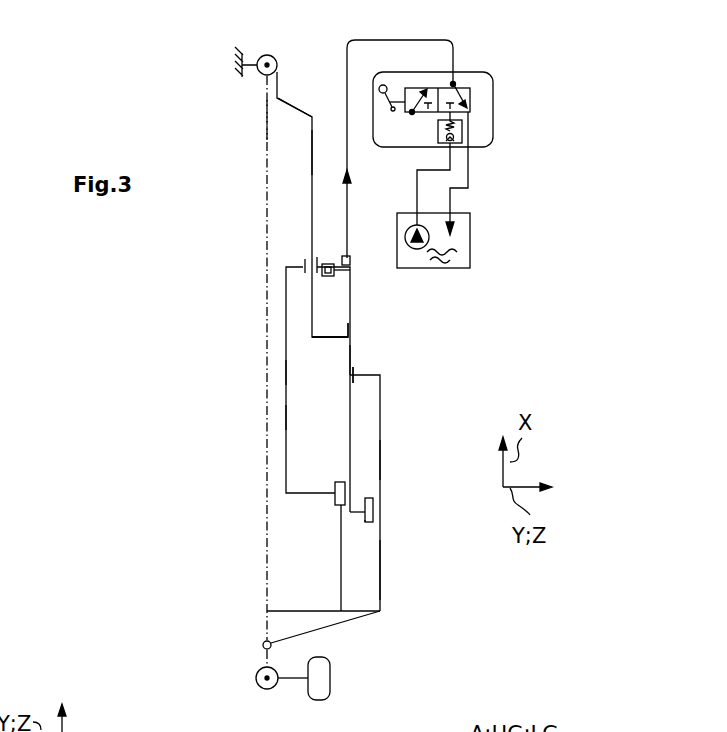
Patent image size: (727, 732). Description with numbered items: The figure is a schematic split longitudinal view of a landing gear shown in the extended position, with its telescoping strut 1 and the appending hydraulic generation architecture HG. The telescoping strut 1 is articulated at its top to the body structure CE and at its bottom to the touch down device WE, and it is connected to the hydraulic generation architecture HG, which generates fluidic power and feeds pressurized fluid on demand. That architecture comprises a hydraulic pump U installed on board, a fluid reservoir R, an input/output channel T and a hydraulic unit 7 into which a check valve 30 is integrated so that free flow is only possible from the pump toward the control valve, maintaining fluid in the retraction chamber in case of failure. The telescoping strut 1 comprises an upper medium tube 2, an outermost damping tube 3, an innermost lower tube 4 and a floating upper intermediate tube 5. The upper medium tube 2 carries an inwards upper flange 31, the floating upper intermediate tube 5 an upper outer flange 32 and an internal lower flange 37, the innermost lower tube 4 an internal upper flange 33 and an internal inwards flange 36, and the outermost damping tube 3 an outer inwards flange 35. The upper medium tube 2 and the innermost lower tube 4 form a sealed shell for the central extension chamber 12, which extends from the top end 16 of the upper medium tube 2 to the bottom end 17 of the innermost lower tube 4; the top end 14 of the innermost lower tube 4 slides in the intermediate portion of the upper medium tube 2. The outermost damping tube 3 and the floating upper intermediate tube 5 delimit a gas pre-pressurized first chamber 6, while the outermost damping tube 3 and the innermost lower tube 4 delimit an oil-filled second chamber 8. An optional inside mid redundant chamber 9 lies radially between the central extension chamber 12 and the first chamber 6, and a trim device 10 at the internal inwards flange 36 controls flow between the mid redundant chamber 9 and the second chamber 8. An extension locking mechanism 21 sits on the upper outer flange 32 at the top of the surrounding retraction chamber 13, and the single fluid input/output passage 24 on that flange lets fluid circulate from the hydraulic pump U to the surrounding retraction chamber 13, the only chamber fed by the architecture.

The telescoping strut 1 is at (390, 602).
The upper medium tube 2 is at (312, 185).
The outermost damping tube 3 is at (381, 405).
The innermost lower tube 4 is at (286, 418).
The floating upper intermediate tube 5 is at (350, 353).
The first chamber 6 is at (368, 463).
The hydraulic unit 7 is at (493, 105).
The second chamber 8 is at (370, 566).
The inside mid redundant chamber 9 is at (300, 372).
The trim device 10 is at (337, 502).
The central extension chamber 12 is at (288, 153).
The surrounding retraction chamber 13 is at (340, 312).
The top end of the innermost lower tube 14 is at (284, 280).
The top end of the upper medium tube 16 is at (262, 118).
The bottom end of the innermost lower tube 17 is at (328, 590).
The extension locking mechanism 21 is at (350, 272).
The fluid input/output passage 24 is at (350, 260).
The check valve 30 is at (462, 128).
The inwards upper flange 31 is at (310, 102).
The upper outer flange 32 is at (333, 262).
The internal upper flange 33 is at (305, 262).
The outer inwards flange 35 is at (355, 372).
The internal inwards flange 36 is at (310, 493).
The internal lower flange 37 is at (365, 522).
The body structure CE is at (238, 60).
The input/output channel T is at (453, 60).
The hydraulic pump U is at (408, 213).
The fluid reservoir R is at (472, 222).
The hydraulic generation architecture HG is at (503, 320).
The touch down device WE is at (330, 685).